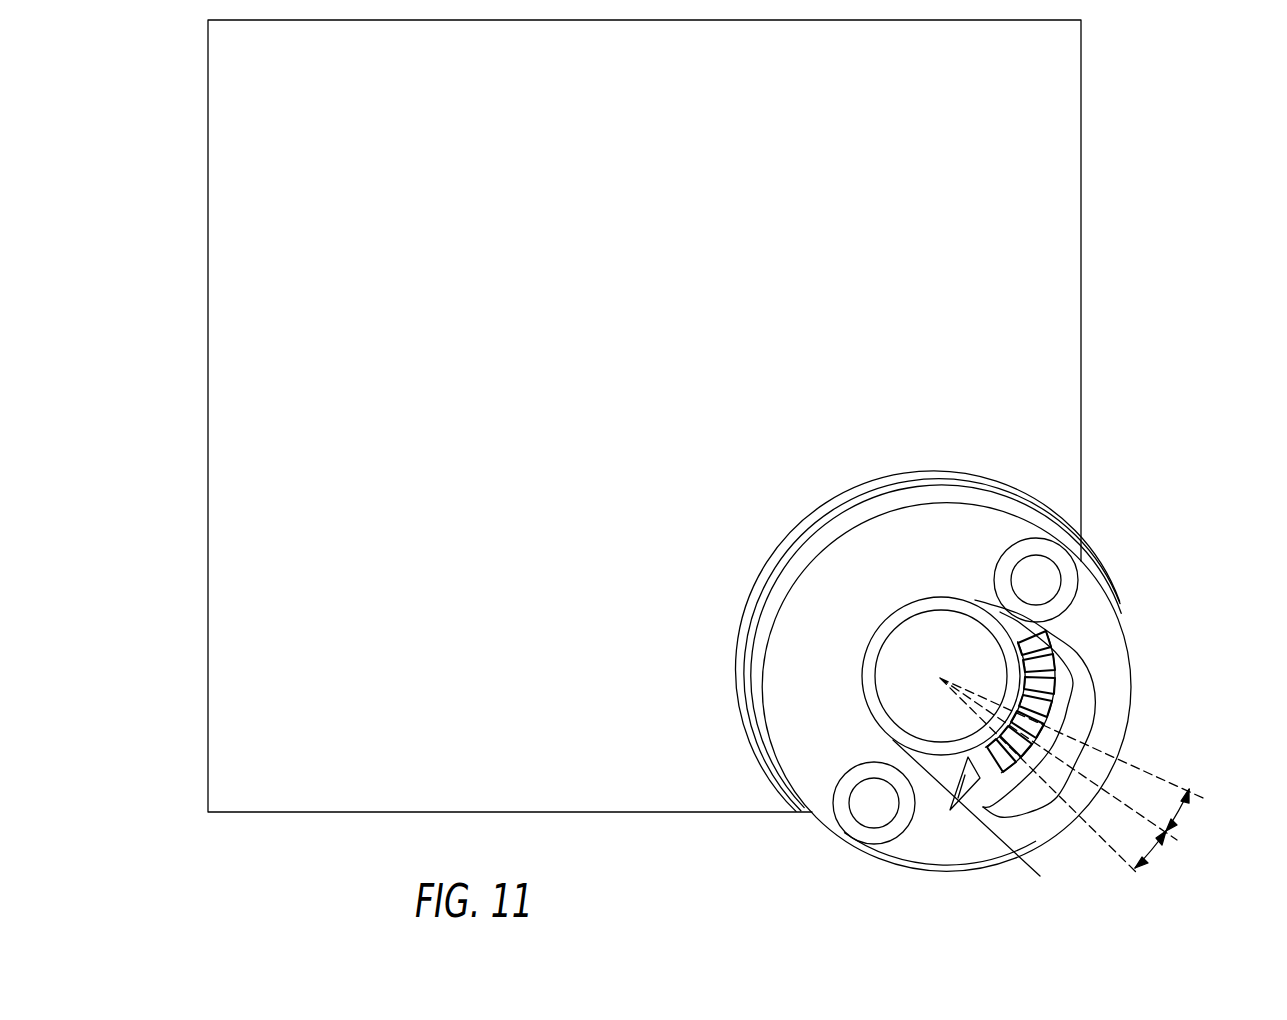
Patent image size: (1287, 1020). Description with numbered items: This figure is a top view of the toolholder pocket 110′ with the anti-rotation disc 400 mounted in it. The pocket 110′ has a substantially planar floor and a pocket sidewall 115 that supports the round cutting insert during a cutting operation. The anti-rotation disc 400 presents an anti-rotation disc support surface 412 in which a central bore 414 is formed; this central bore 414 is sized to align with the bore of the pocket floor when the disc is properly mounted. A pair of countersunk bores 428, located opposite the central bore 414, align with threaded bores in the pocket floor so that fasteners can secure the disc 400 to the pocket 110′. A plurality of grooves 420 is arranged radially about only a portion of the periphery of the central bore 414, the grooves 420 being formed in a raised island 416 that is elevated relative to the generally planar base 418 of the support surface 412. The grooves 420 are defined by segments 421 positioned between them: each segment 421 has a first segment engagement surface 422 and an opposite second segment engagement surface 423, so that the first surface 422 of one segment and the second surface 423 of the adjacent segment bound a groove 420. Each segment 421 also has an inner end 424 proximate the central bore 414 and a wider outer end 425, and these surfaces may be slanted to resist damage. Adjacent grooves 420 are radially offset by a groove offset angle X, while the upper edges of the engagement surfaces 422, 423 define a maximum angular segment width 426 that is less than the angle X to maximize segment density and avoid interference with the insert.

The toolholder pocket 110′ is at (768, 485).
The anti-rotation disc 400 is at (1150, 605).
The pocket sidewall 115 is at (765, 700).
The anti-rotation disc support surface 412 is at (1097, 622).
The countersunk bores 428 is at (1050, 578).
The central bore 414 is at (935, 620).
The outer end 425 is at (1000, 617).
The base 418 is at (980, 855).
The raised island 416 is at (1073, 730).
The grooves 420 is at (1046, 712).
The inner end 424 is at (1008, 680).
The second segment engagement surface 423 is at (1003, 750).
The first segment engagement surface 422 is at (968, 808).
The segments 421 is at (972, 822).
The maximum angular segment width 426 is at (1186, 815).
The groove offset angle X is at (1153, 857).